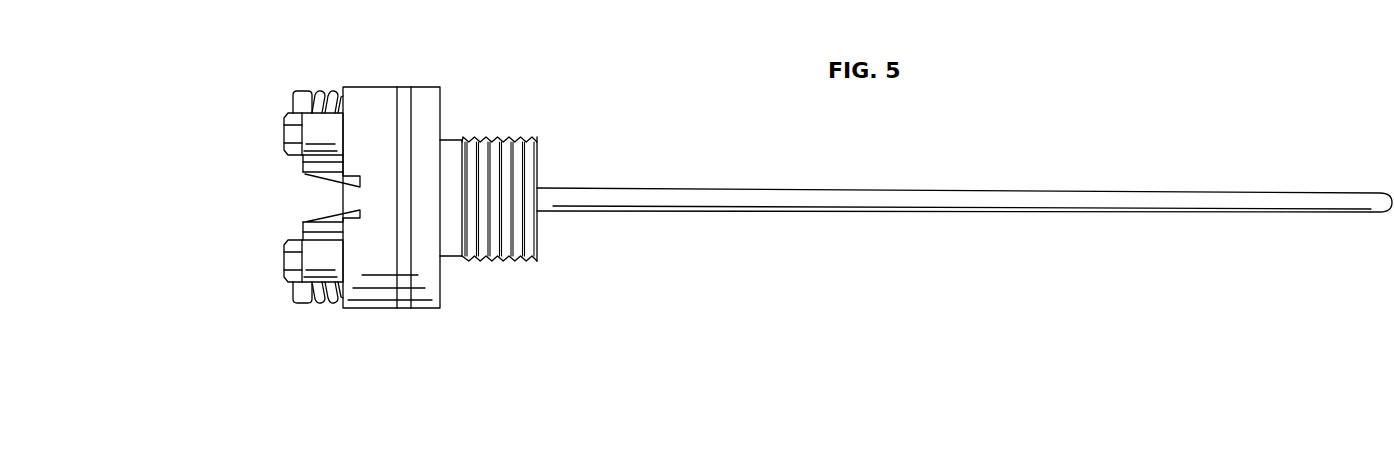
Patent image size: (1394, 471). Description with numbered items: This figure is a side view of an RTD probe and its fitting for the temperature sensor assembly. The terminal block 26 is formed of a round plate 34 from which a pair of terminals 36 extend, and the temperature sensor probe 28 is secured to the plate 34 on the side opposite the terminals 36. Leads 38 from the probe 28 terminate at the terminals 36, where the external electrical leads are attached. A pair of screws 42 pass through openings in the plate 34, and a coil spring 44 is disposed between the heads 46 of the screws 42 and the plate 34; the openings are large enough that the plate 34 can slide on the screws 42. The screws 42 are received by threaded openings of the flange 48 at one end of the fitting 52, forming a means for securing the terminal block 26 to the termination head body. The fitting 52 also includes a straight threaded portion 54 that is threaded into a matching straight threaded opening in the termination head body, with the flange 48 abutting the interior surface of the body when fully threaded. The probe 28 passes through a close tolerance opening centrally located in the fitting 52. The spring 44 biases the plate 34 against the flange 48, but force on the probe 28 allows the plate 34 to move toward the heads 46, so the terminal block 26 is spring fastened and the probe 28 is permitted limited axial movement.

The terminal block 26 is at (330, 197).
The probe 28 is at (703, 188).
The round plate 34 is at (392, 87).
The terminals 36 is at (285, 137).
The leads 38 is at (310, 178).
The screws 42 is at (297, 102).
The coil spring 44 is at (324, 87).
The heads 46 is at (298, 87).
The flange 48 is at (440, 87).
The fitting 52 is at (563, 253).
The straight threaded portion 54 is at (538, 138).